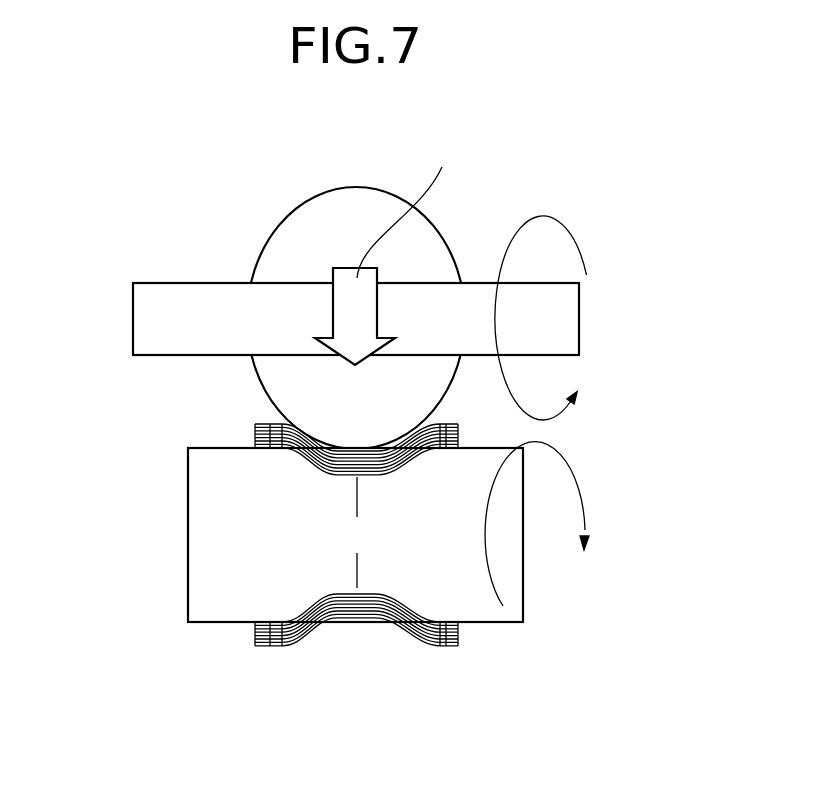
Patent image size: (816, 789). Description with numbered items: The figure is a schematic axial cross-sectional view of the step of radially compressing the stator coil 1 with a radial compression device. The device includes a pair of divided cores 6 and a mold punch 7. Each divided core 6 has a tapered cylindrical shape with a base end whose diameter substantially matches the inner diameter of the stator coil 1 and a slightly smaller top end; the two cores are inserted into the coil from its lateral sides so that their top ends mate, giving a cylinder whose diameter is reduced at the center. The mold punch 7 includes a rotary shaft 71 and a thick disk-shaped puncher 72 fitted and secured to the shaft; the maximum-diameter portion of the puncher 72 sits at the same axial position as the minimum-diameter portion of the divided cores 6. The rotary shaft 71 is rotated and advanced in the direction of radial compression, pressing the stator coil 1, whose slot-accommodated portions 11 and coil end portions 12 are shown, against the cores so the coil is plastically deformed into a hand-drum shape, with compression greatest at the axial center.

The stator coil 1 is at (358, 586).
The slot-accommodated portions 11 is at (367, 612).
The coil end portions 12 is at (265, 648).
The divided cores 6 is at (205, 537).
The mold punch 7 is at (389, 286).
The rotary shaft 71 is at (232, 342).
The puncher 72 is at (360, 195).